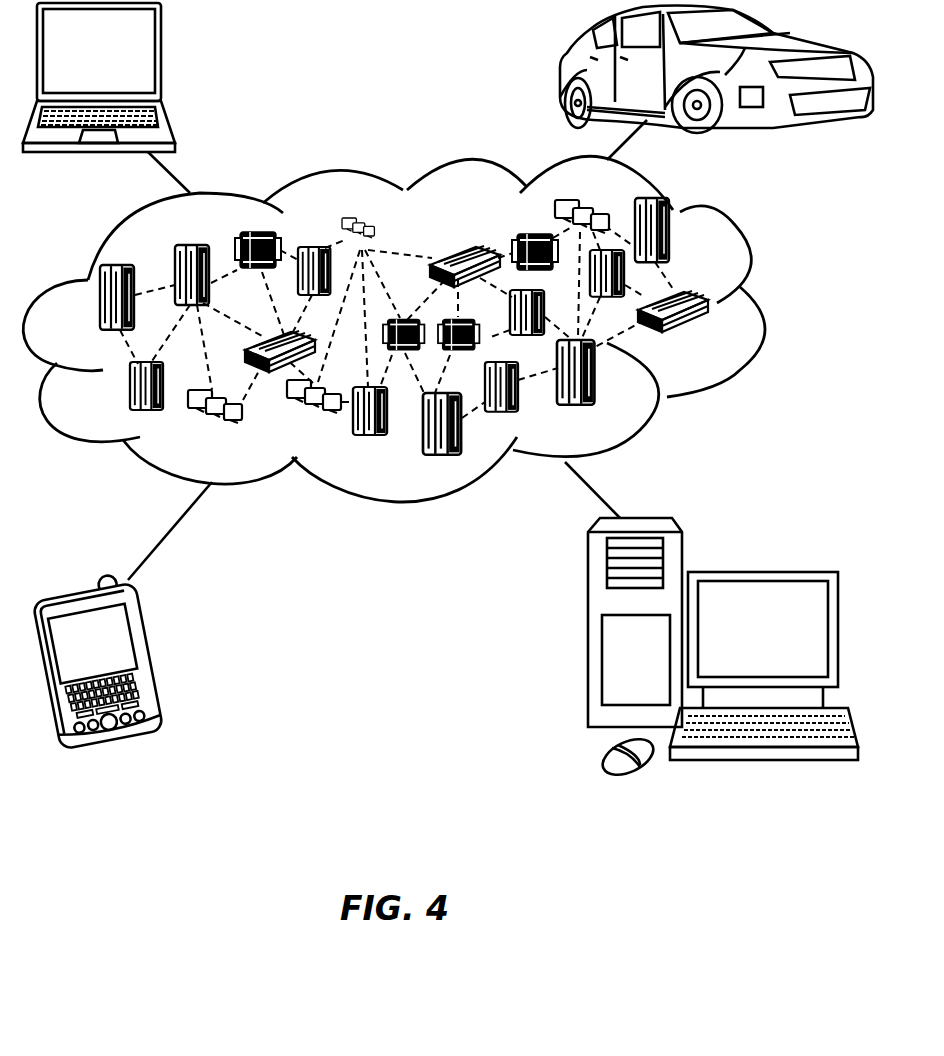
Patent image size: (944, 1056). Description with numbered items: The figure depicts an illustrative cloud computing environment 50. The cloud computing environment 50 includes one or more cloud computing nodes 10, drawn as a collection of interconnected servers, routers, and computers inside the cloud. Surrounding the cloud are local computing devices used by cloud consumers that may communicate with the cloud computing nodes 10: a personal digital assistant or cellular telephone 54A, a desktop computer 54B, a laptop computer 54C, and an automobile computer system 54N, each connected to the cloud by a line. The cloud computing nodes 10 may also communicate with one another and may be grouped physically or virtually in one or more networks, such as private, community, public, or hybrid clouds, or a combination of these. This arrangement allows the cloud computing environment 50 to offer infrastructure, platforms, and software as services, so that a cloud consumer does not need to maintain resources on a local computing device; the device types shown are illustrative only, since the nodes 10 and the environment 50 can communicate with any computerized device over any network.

The cloud computing environment 50 is at (762, 303).
The cloud computing nodes 10 is at (712, 337).
The personal digital assistant or cellular telephone 54A is at (153, 657).
The desktop computer 54B is at (760, 571).
The laptop computer 54C is at (162, 60).
The automobile computer system 54N is at (562, 70).